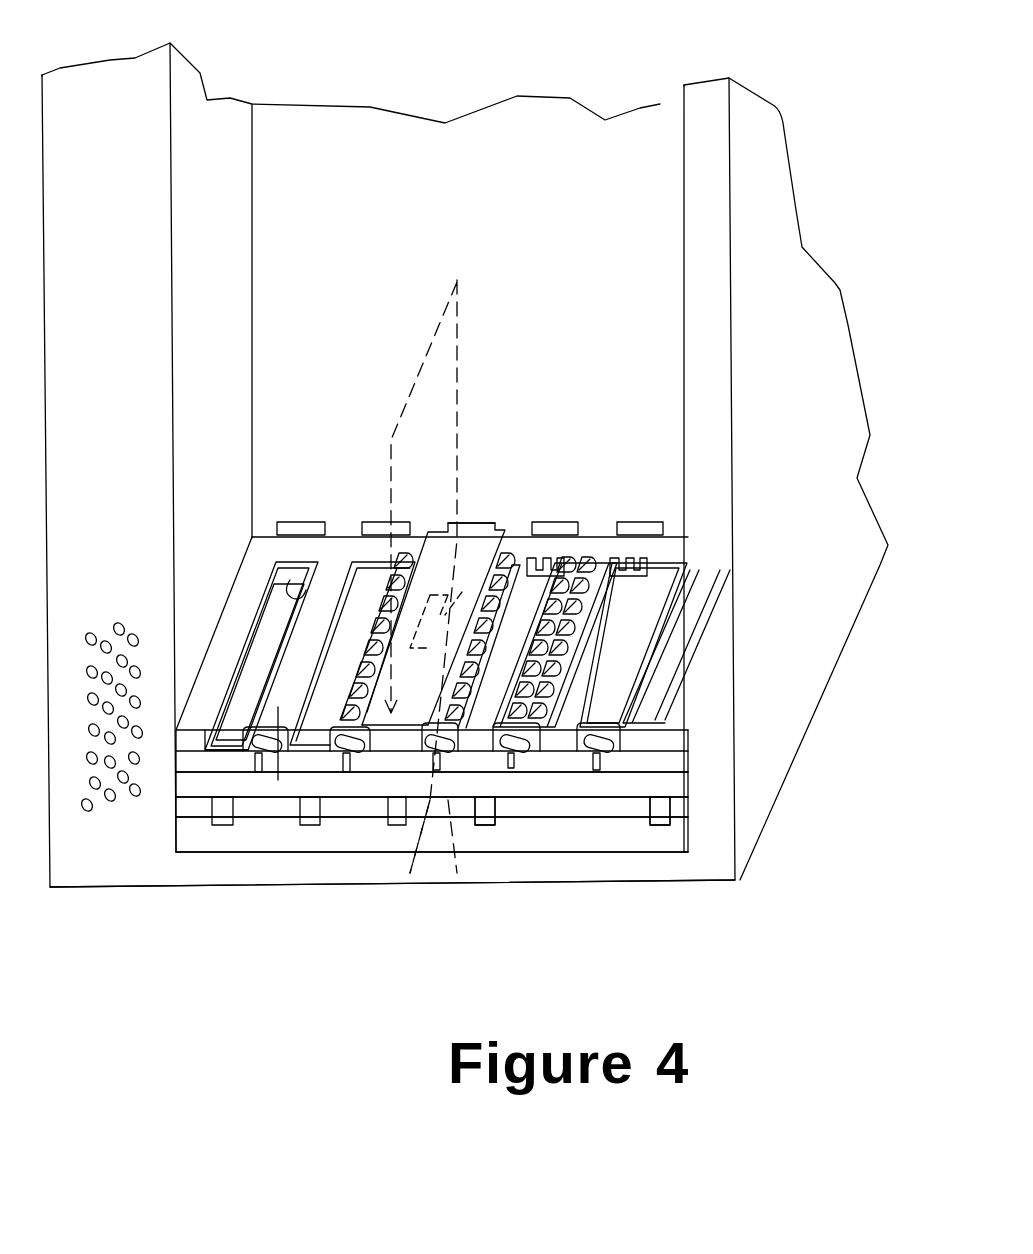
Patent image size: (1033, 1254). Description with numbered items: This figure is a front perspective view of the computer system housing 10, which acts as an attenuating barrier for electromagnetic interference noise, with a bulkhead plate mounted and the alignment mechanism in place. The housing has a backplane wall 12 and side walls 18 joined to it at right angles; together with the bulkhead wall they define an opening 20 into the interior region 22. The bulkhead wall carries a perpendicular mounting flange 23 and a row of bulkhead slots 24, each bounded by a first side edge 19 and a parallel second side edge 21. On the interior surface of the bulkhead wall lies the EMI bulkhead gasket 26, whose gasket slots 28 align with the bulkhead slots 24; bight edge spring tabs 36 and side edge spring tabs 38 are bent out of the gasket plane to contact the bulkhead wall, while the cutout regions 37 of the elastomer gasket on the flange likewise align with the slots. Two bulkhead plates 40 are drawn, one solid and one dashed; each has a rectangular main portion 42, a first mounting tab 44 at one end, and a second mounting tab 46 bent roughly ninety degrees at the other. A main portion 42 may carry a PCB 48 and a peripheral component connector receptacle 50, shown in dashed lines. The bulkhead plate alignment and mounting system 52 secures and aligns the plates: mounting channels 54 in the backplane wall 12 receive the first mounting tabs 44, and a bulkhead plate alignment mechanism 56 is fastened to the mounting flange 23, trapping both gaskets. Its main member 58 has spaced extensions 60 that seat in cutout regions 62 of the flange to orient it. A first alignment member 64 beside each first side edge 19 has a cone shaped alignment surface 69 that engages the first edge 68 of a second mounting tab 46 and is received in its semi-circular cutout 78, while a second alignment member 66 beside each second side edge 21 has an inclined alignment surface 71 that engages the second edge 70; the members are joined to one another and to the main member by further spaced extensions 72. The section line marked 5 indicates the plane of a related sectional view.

The computer system housing 10 is at (804, 124).
The backplane wall 12 is at (627, 152).
The side walls 18 is at (205, 128).
The first side edge 19 is at (253, 640).
The opening 20 is at (668, 428).
The second side edge 21 is at (295, 582).
The interior region 22 is at (652, 296).
The mounting flange 23 is at (620, 740).
The bulkhead slots 24 is at (268, 588).
The EMI bulkhead gasket 26 is at (270, 525).
The gasket slots 28 is at (233, 670).
The bight edge spring tabs 36 is at (537, 565).
The cutout regions 37 is at (238, 745).
The side edge spring tabs 38 is at (598, 568).
The bulkhead plates 40 is at (490, 527).
The main portion 42 is at (447, 532).
The first mounting tab 44 is at (477, 521).
The second mounting tab 46 is at (400, 760).
The PCB 48 is at (447, 347).
The peripheral component connector receptacle 50 is at (471, 556).
The bulkhead plate alignment and mounting system 52 is at (182, 887).
The mounting channels 54 is at (645, 520).
The bulkhead plate alignment mechanism 56 is at (686, 803).
The main member 58 is at (270, 790).
The spaced extensions 60 is at (485, 817).
The cutout regions 62 is at (580, 827).
The first alignment member 64 is at (600, 740).
The second alignment member 66 is at (590, 740).
The first edge 68 is at (345, 765).
The cone shaped alignment surface 69 is at (275, 740).
The second edge 70 is at (440, 720).
The inclined alignment surface 71 is at (250, 760).
The further spaced extensions 72 is at (250, 790).
The semi-circular cutout 78 is at (360, 765).
The section line 5- 5 is at (308, 787).